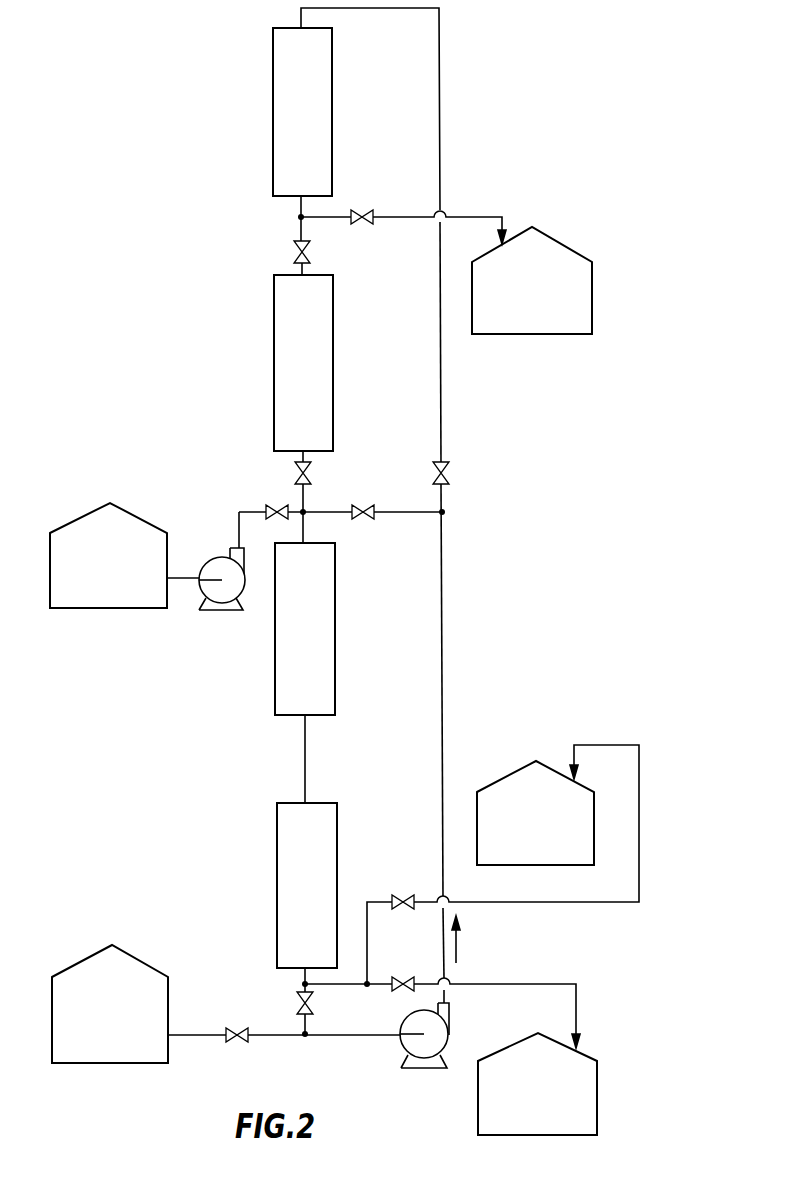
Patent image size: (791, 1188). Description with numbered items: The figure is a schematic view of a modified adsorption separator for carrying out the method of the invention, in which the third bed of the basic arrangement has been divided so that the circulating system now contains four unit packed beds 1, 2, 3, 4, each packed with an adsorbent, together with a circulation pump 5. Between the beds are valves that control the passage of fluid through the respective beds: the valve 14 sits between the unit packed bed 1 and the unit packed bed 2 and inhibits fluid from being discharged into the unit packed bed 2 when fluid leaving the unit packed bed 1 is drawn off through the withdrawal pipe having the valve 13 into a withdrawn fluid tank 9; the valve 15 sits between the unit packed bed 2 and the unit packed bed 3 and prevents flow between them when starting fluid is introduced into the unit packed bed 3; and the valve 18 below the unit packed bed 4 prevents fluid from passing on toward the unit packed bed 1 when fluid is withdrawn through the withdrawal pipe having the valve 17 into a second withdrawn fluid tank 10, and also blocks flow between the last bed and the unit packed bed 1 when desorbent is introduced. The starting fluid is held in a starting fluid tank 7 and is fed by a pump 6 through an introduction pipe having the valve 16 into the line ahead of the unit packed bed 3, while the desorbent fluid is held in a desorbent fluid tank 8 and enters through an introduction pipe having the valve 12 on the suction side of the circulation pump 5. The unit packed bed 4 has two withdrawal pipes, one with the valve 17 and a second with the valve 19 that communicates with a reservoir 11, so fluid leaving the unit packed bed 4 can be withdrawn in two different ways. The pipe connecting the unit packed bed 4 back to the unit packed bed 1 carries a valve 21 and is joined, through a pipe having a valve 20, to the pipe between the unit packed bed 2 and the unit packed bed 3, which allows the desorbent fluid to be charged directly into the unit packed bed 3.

The unit packed bed 1 is at (293, 114).
The unit packed bed 2 is at (296, 355).
The unit packed bed 3 is at (298, 620).
The unit packed bed 4 is at (300, 878).
The circulation pump 5 is at (408, 1046).
The pump 6 is at (236, 584).
The starting fluid tank 7 is at (98, 566).
The desorbent fluid tank 8 is at (101, 1010).
The withdrawn fluid tank 9 is at (525, 295).
The withdrawn fluid tank 10 is at (527, 1098).
The reservoir 11 is at (527, 825).
The valve 12 is at (233, 1027).
The valve 13 is at (361, 209).
The valve 14 is at (292, 249).
The valve 15 is at (312, 471).
The valve 16 is at (270, 505).
The valve 17 is at (403, 975).
The valve 18 is at (314, 1003).
The valve 19 is at (403, 893).
The valve 20 is at (365, 520).
The valve 21 is at (452, 470).